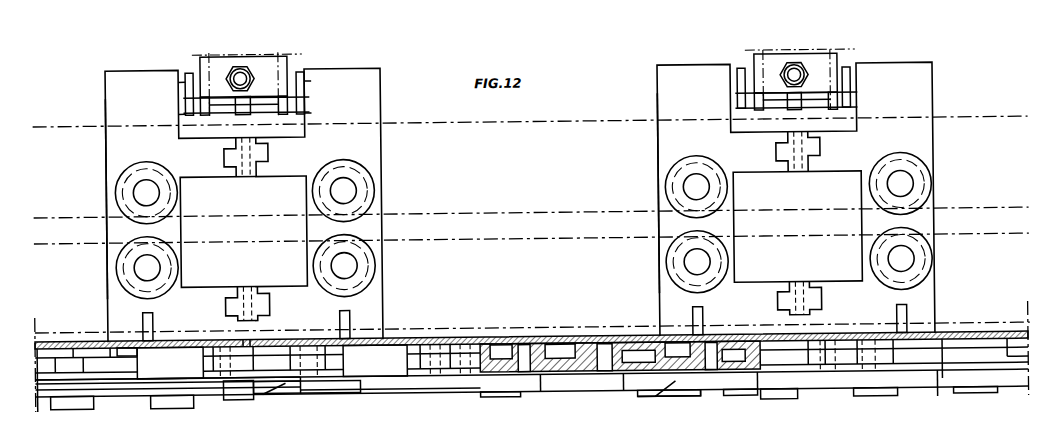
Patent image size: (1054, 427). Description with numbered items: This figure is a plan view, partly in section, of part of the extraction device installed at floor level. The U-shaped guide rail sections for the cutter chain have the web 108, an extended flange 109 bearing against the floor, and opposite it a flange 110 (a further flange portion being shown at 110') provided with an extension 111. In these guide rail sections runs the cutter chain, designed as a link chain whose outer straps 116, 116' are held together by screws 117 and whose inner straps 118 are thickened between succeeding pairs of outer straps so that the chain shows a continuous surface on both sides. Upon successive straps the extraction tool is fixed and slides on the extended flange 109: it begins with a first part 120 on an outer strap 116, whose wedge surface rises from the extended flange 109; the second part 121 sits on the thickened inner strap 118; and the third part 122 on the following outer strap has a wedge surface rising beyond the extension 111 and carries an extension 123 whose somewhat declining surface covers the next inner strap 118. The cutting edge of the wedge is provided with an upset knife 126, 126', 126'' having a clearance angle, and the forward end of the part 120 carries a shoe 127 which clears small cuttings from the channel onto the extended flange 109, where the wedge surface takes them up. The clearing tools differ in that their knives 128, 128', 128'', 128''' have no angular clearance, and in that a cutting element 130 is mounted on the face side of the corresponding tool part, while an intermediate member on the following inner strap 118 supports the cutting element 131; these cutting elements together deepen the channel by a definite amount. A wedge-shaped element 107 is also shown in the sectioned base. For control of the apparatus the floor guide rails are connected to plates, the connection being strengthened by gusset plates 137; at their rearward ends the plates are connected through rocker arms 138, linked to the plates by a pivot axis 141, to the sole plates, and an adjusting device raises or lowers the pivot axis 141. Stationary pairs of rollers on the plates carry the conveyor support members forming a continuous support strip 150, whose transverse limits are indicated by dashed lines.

The wedge 107 is at (266, 398).
The web 108 is at (95, 342).
The extended flange 109 is at (105, 403).
The flange 110 is at (116, 411).
The support block 110' is at (232, 404).
The extension 111 is at (198, 398).
The outer strap 116 is at (86, 363).
The outer strap 116' is at (163, 340).
The screw 117 is at (128, 350).
The inner strap 118 is at (165, 349).
The first part 120 is at (358, 398).
The second part 121 is at (416, 398).
The third part 122 is at (457, 402).
The extension 123 is at (596, 398).
The upset knife 126 is at (391, 407).
The upset knife 126' is at (387, 410).
The upset knife 126'' is at (528, 402).
The shoe 127 is at (686, 403).
The knife 128 is at (739, 403).
The knife 128' is at (794, 400).
The knife 128'' is at (923, 399).
The knife 128''' is at (989, 400).
The cutting element 130 is at (868, 405).
The cutting element 131 is at (970, 394).
The gusset plate 137 is at (704, 324).
The rocker arm 138 is at (192, 75).
The pivot axis 141 is at (181, 78).
The support strip 150 is at (62, 220).